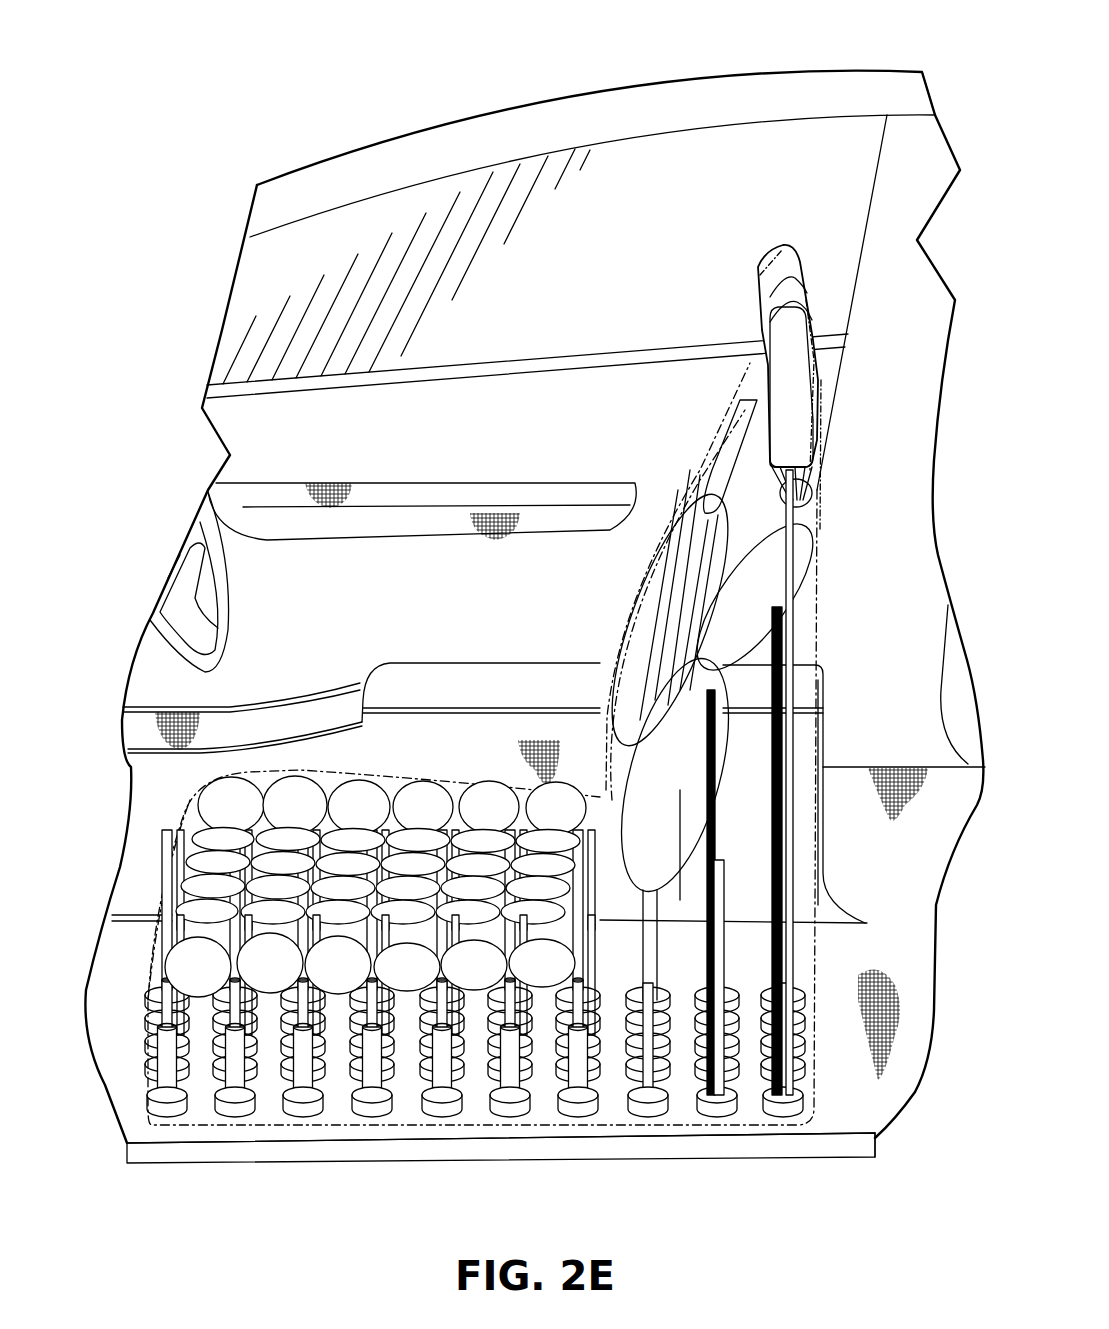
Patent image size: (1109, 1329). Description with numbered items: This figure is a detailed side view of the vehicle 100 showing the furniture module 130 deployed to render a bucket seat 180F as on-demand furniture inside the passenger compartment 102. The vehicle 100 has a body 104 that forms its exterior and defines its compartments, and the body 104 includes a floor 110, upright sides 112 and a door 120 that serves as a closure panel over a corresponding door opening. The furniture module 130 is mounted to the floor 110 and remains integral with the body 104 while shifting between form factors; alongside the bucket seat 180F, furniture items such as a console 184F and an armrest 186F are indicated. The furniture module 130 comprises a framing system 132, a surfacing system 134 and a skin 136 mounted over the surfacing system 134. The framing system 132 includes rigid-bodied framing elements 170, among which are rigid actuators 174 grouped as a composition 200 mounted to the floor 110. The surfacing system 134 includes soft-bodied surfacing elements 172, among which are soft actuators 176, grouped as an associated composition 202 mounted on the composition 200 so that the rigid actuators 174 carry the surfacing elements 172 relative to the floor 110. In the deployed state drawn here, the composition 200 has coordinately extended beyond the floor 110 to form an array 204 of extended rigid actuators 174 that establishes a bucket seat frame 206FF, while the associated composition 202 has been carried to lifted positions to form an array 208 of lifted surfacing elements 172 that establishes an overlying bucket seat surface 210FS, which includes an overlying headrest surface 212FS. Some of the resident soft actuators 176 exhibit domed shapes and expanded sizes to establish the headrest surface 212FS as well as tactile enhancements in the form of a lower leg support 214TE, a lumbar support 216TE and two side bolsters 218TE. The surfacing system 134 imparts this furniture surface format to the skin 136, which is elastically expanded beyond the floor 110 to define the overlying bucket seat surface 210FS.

The vehicle 100 is at (812, 44).
The passenger compartment 102 is at (822, 132).
The body 104 is at (932, 167).
The floor 110 is at (902, 962).
The upright sides 112 is at (590, 406).
The door 120 is at (682, 406).
The furniture module 130 is at (200, 1122).
The framing system 132 is at (475, 1004).
The surfacing system 134 is at (753, 851).
The skin 136 is at (152, 952).
The framing elements 170 is at (475, 999).
The surfacing elements 172 is at (695, 846).
The rigid actuators 174 is at (510, 1108).
The soft actuators 176 is at (545, 975).
The bucket seat 180F is at (643, 570).
The console 184F is at (466, 688).
The armrest 186F is at (465, 492).
The composition of the rigid actuators 200 is at (322, 1170).
The associated composition of the surfacing elements 202 is at (840, 1170).
The array of extended rigid actuators 204 is at (624, 597).
The bucket seat frame 206FF is at (688, 662).
The array of lifted surfacing elements 208 is at (588, 579).
The overlying bucket seat surface 210FS is at (622, 597).
The overlying headrest surface 212FS is at (755, 308).
The lower leg support 214TE is at (490, 812).
The lumbar support 216TE is at (760, 657).
The side bolsters 218TE is at (645, 773).